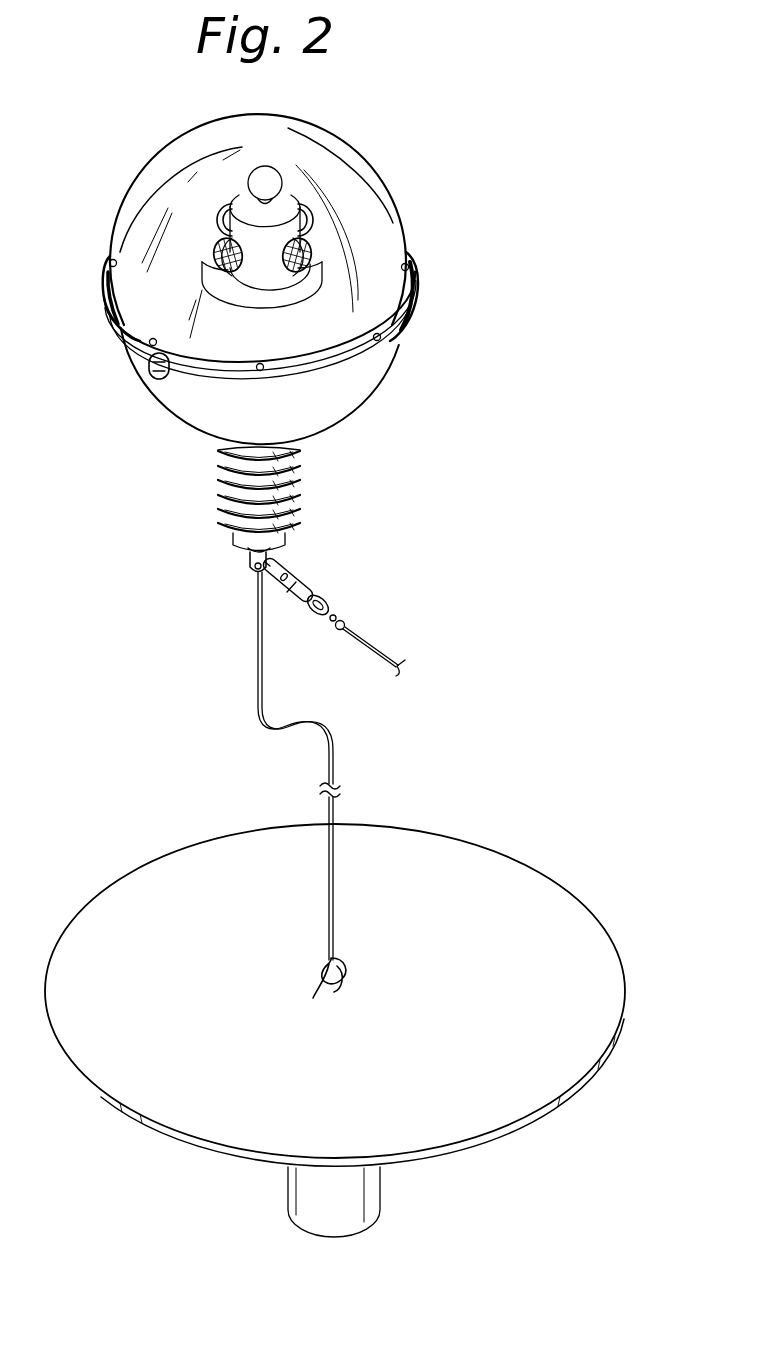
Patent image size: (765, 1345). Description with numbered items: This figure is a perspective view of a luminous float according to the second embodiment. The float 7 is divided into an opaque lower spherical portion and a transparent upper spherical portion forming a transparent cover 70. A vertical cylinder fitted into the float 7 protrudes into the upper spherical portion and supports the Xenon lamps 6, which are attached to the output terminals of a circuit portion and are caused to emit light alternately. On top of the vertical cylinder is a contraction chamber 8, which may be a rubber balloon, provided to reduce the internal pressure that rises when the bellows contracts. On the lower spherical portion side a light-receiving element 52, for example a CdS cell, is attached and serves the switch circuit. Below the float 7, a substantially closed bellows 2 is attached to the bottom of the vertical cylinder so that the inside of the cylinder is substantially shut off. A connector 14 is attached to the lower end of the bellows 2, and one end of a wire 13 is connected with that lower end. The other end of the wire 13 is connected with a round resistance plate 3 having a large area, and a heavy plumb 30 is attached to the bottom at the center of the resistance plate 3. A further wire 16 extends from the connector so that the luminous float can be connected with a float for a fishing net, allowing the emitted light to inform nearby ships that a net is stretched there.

The bellows 2 is at (297, 477).
The resistance plate 3 is at (485, 867).
The Xenon lamps 6 is at (214, 217).
The float 7 is at (367, 383).
The contraction chamber 8 is at (271, 168).
The wire 13 is at (333, 737).
The connector 14 is at (308, 585).
The wire 16 is at (383, 650).
The plumb 30 is at (365, 1196).
The light-receiving element 52 is at (147, 370).
The transparent cover 70 is at (400, 223).